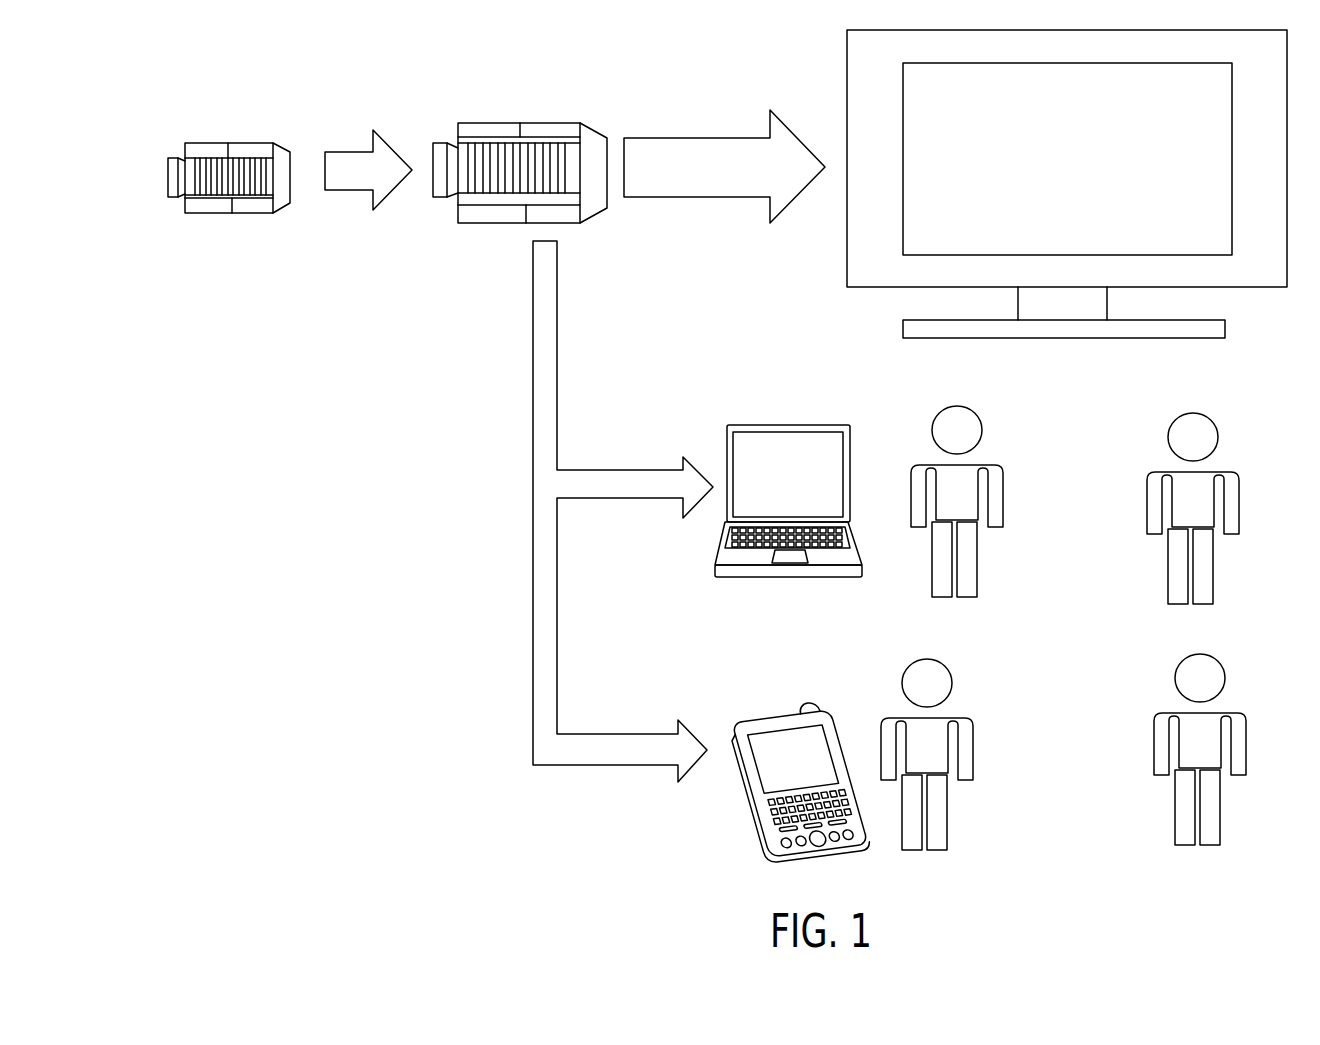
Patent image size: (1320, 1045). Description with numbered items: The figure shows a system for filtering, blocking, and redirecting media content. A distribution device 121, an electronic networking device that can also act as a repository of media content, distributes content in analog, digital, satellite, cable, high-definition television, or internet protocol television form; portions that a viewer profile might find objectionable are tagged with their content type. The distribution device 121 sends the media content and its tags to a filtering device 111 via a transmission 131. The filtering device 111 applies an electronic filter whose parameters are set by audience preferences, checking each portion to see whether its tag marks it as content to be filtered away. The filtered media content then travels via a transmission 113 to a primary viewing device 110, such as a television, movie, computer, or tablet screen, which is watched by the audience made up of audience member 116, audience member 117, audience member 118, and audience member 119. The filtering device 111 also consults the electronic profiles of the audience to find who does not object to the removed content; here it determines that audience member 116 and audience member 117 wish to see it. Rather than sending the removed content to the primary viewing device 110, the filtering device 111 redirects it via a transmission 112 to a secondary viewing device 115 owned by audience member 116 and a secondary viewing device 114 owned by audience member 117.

The primary viewing device 110 is at (926, 112).
The filtering device 111 is at (545, 130).
The transmission 112 is at (543, 620).
The transmission 113 is at (693, 155).
The secondary viewing device 114 is at (772, 737).
The secondary viewing device 115 is at (764, 447).
The audience member 116 is at (992, 496).
The audience member 117 is at (962, 750).
The audience member 118 is at (1228, 503).
The audience member 119 is at (1235, 745).
The distribution device 121 is at (207, 150).
The transmission 131 is at (353, 158).